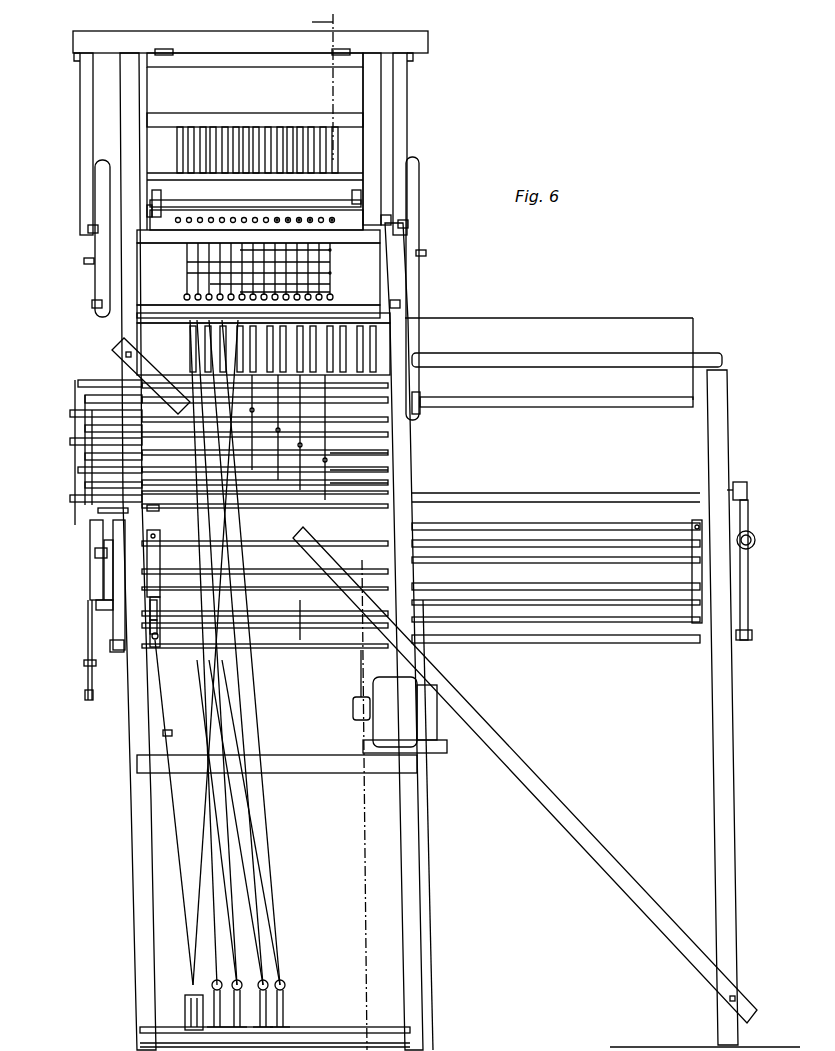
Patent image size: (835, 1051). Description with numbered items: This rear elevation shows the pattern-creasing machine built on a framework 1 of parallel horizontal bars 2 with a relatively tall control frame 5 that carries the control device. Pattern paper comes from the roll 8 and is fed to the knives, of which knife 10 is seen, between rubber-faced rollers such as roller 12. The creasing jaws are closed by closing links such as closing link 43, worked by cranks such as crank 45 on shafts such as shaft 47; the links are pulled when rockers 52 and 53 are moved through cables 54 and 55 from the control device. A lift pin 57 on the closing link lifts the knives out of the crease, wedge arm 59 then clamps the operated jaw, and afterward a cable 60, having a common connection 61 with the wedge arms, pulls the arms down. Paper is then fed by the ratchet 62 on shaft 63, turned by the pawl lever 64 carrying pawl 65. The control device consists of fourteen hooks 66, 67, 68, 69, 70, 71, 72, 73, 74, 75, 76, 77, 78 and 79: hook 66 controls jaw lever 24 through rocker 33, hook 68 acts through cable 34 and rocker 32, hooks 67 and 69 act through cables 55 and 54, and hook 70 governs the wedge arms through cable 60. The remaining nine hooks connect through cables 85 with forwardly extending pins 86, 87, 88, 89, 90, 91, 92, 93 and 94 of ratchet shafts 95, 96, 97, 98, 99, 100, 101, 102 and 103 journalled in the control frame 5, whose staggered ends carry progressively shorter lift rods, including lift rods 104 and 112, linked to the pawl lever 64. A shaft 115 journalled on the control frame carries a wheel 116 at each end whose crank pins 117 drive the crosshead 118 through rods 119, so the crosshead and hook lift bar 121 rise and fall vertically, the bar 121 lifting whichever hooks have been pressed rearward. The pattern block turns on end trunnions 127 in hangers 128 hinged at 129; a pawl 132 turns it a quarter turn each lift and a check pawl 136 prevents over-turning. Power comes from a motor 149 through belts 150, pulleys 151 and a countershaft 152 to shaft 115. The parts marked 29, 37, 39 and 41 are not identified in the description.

The framework 1 is at (730, 458).
The horizontal bars 2 is at (88, 612).
The control frame 5 is at (118, 320).
The roll 8 is at (478, 332).
The knife 10 is at (255, 650).
The rubber-faced roller 12 is at (262, 572).
The jaw lever 24 is at (158, 630).
The diagonal bar 29 is at (427, 540).
The rocker 32 is at (285, 1000).
The rocker 33 is at (185, 990).
The cable 34 is at (262, 934).
The bracket 37 is at (158, 640).
The bracket 39 is at (160, 580).
The bracket 41 is at (697, 623).
The closing link 43 is at (748, 520).
The crank 45 is at (745, 482).
The shaft 47 is at (480, 490).
The rocker 52 is at (285, 986).
The rocker 53 is at (210, 1018).
The cable 54 is at (232, 900).
The cable 55 is at (270, 868).
The lift pin 57 is at (84, 662).
The wedge arm 59 is at (115, 652).
The cable 60 is at (198, 742).
The common connection 61 is at (162, 690).
The ratchet 62 is at (104, 560).
The shaft 63 is at (755, 540).
The pawl lever 64 is at (85, 693).
The pawl 65 is at (96, 604).
The hook 66 is at (190, 273).
The hook 67 is at (184, 297).
The hook 68 is at (190, 262).
The hook 69 is at (187, 250).
The hook 70 is at (330, 250).
The hook 71 is at (353, 250).
The hook 72 is at (330, 273).
The hook 73 is at (353, 270).
The hook 74 is at (330, 290).
The hook 75 is at (272, 216).
The hook 76 is at (286, 216).
The hook 77 is at (300, 216).
The hook 78 is at (312, 216).
The hook 79 is at (335, 215).
The cables 85 is at (305, 348).
The pin 86 is at (230, 380).
The pin 87 is at (250, 410).
The pin 88 is at (252, 470).
The pin 89 is at (278, 480).
The pin 90 is at (300, 490).
The pin 91 is at (325, 500).
The pin 92 is at (345, 462).
The pin 93 is at (340, 478).
The pin 94 is at (335, 493).
The ratchet shaft 95 is at (78, 380).
The ratchet shaft 96 is at (85, 398).
The ratchet shaft 97 is at (70, 413).
The ratchet shaft 98 is at (85, 428).
The ratchet shaft 99 is at (70, 442).
The ratchet shaft 100 is at (85, 457).
The ratchet shaft 101 is at (78, 470).
The ratchet shaft 102 is at (85, 485).
The ratchet shaft 103 is at (72, 502).
The lift rod 104 is at (117, 346).
The lift rod 112 is at (90, 530).
The shaft 115 is at (88, 229).
The wheel 116 is at (95, 185).
The crank pin 117 is at (84, 261).
The crosshead 118 is at (428, 42).
The rod 119 is at (80, 128).
The hook lift bar 121 is at (258, 213).
The end trunnion 127 is at (390, 218).
The hanger 128 is at (120, 88).
The hinge 129 is at (168, 48).
The pawl 132 is at (162, 205).
The check pawl 136 is at (362, 196).
The motor 149 is at (373, 715).
The belt 150 is at (420, 345).
The pulley 151 is at (418, 414).
The countershaft 152 is at (425, 397).